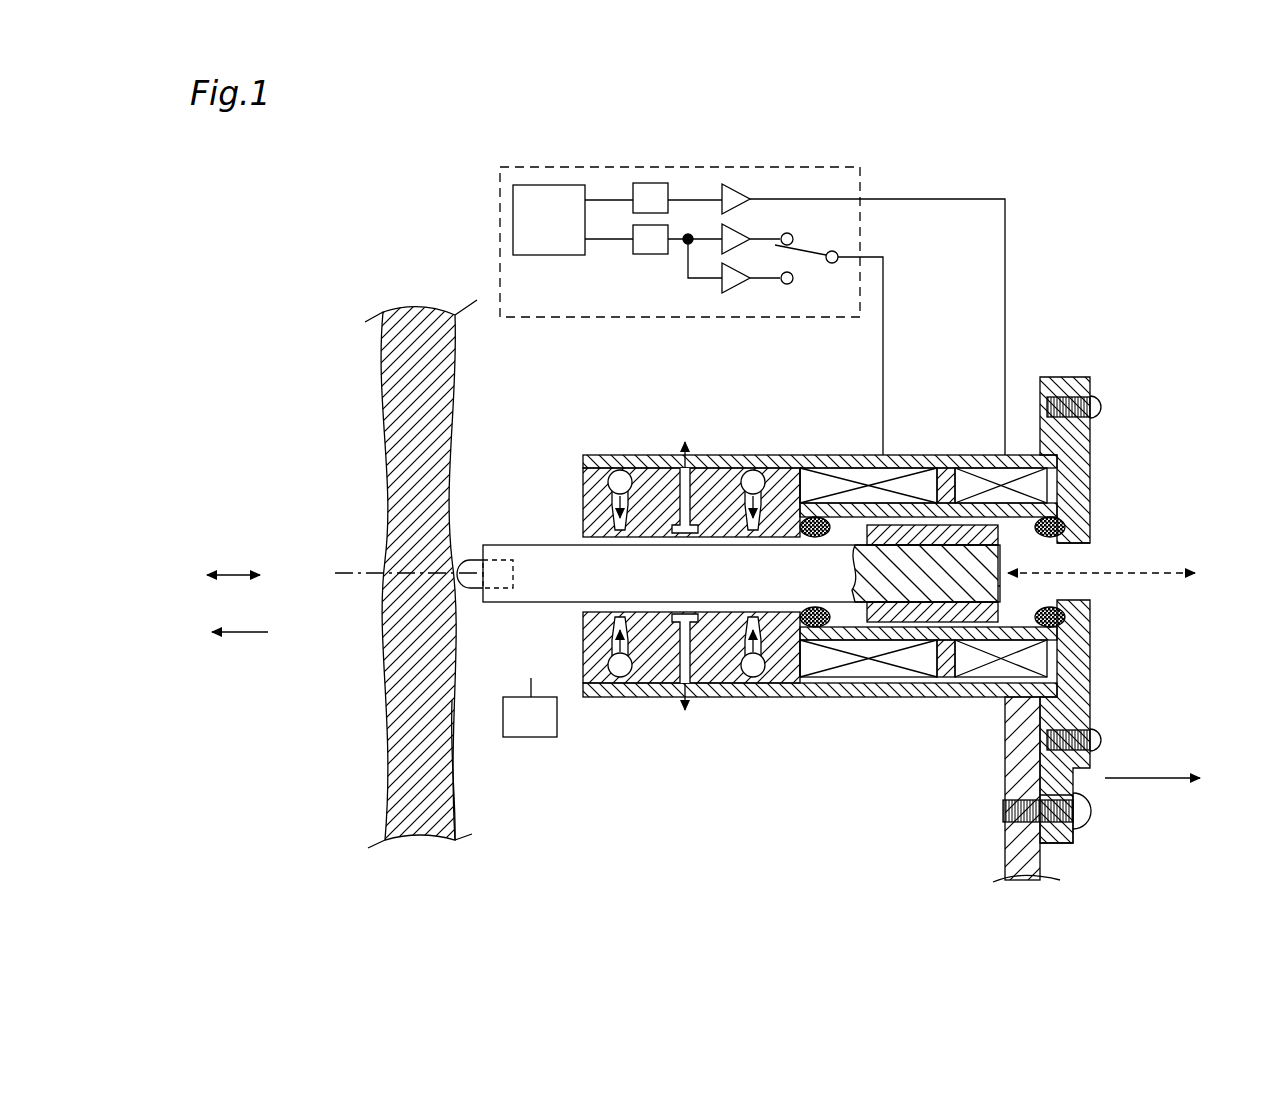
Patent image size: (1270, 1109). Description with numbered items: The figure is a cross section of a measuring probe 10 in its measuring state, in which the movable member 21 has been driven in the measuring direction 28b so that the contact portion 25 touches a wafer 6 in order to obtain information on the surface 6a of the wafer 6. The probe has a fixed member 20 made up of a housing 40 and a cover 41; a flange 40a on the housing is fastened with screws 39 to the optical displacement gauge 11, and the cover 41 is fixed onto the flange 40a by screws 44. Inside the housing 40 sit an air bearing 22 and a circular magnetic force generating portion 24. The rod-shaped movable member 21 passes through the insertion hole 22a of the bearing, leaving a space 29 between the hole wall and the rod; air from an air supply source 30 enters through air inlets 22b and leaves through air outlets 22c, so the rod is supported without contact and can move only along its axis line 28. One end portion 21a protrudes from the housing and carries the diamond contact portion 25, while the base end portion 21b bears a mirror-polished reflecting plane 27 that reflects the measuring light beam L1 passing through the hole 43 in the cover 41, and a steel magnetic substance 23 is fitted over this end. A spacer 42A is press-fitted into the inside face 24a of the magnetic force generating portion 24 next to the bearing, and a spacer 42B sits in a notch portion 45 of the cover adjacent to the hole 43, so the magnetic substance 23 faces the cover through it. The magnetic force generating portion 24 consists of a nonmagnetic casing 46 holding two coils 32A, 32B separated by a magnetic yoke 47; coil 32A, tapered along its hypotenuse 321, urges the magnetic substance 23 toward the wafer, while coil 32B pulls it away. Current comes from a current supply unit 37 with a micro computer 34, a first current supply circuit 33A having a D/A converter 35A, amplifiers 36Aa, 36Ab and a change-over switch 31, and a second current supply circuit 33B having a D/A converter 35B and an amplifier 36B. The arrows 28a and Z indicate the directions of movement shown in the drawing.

The wafer 6 is at (400, 748).
The surface of the wafer 6a is at (462, 790).
The measuring probe 10 is at (1020, 310).
The optical displacement gauge 11 is at (1027, 852).
The fixed member 20 is at (775, 700).
The movable member 21 is at (850, 600).
The one end portion 21a is at (583, 667).
The base end portion 21b is at (1003, 586).
The air bearing 22 is at (718, 698).
The insertion hole 22a is at (562, 545).
The air inlets 22b is at (588, 640).
The air outlets 22c is at (645, 698).
The magnetic substance 23 is at (965, 470).
The magnetic force generating portion 24 is at (948, 480).
The inside face 24a is at (845, 690).
The contact portion 25 is at (467, 562).
The reflecting plane 27 is at (1000, 550).
The axis line 28 is at (353, 575).
The reciprocating direction 28a is at (230, 575).
The measuring direction 28b is at (240, 632).
The space 29 is at (710, 525).
The air supply source 30 is at (520, 737).
The change-over switch 31 is at (808, 243).
The coil 32A is at (900, 680).
The coil 32B is at (958, 664).
The hypotenuse 321 is at (802, 480).
The first current supply circuit 33A is at (885, 297).
The second current supply circuit 33B is at (965, 197).
The micro computer 34 is at (553, 185).
The D/A converter 35A is at (650, 256).
The D/A converter 35B is at (648, 183).
The amplifier 36Aa is at (733, 232).
The amplifier 36Ab is at (730, 295).
The amplifier 36B is at (735, 184).
The current supply unit 37 is at (512, 168).
The screws 39 is at (1090, 822).
The housing 40 is at (745, 690).
The flange 40a is at (1058, 835).
The cover 41 is at (1092, 450).
The spacer 42A is at (822, 630).
The spacer 42B is at (1064, 622).
The hole 43 is at (1088, 556).
The screws 44 is at (1100, 405).
The notch portion 45 is at (1093, 533).
The casing 46 is at (815, 503).
The yoke 47 is at (930, 480).
The measuring light beam L1 is at (1125, 610).
The direction Z is at (1142, 778).